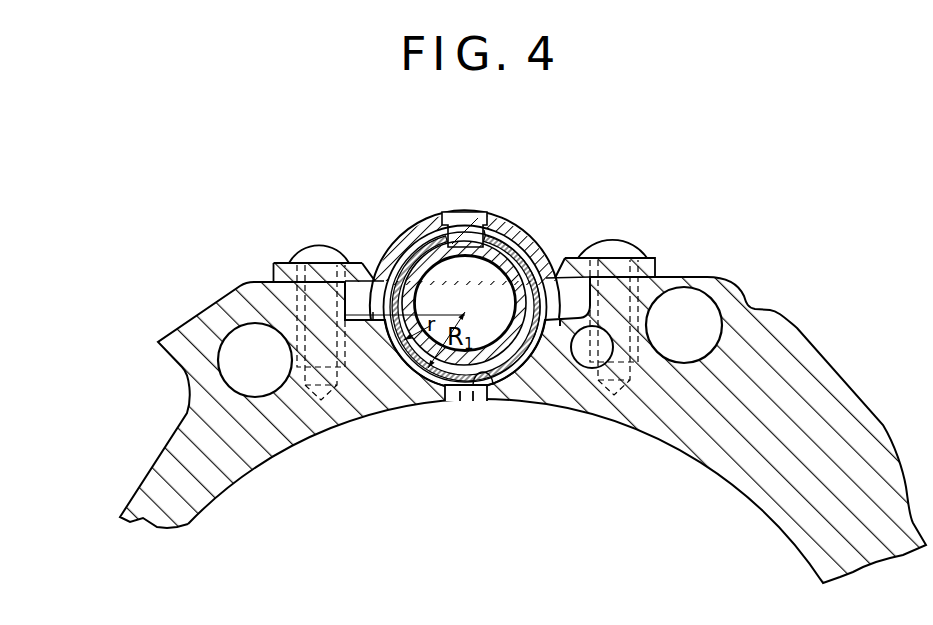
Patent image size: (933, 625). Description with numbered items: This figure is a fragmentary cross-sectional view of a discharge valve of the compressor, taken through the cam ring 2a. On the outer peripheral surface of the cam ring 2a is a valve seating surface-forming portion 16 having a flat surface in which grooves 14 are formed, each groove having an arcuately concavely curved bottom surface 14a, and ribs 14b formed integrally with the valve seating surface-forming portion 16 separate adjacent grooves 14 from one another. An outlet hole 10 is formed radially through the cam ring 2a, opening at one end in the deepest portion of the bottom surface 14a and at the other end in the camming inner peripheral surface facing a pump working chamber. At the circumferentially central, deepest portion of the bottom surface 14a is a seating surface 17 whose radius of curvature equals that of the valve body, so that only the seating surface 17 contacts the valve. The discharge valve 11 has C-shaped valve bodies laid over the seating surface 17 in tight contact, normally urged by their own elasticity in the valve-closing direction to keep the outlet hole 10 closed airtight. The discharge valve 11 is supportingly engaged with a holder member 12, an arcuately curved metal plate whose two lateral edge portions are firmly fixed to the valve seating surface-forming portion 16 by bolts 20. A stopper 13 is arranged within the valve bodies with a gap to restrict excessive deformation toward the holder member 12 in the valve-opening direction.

The cam ring 2a is at (173, 355).
The outlet hole 10 is at (448, 392).
The discharge valve 11 is at (418, 341).
The holder member 12 is at (409, 231).
The stopper 13 is at (506, 221).
The groove 14 is at (560, 312).
The bottom surface 14a is at (563, 332).
The rib 14b is at (377, 318).
The valve seating surface-forming portion 16 is at (696, 276).
The seating surface 17 is at (487, 388).
The bolt 20 is at (308, 248).